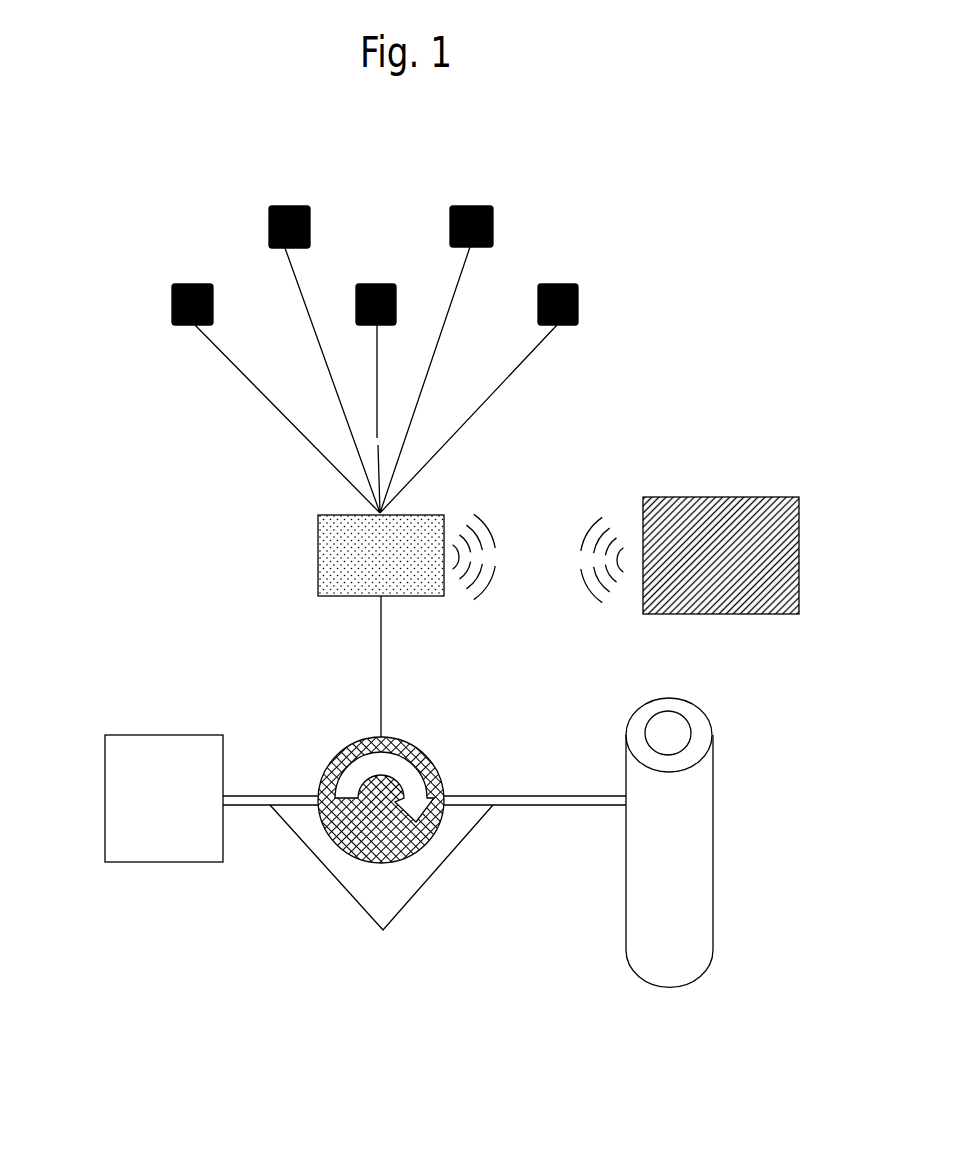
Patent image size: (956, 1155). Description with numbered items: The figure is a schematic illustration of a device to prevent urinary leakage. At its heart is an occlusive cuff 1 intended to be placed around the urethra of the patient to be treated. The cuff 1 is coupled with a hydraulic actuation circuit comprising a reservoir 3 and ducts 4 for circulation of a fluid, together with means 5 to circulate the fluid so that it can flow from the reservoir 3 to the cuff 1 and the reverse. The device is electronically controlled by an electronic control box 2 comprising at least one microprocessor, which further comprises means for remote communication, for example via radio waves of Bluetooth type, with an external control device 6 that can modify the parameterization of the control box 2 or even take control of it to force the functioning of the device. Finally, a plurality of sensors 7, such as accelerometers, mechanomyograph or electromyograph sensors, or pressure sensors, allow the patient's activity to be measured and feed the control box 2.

The occlusive cuff 1 is at (715, 780).
The electronic control box 2 is at (318, 545).
The reservoir 3 is at (145, 862).
The ducts 4 is at (381, 889).
The means to circulate the fluid 5 is at (347, 747).
The external control device 6 is at (732, 497).
The sensors 7 is at (137, 178).